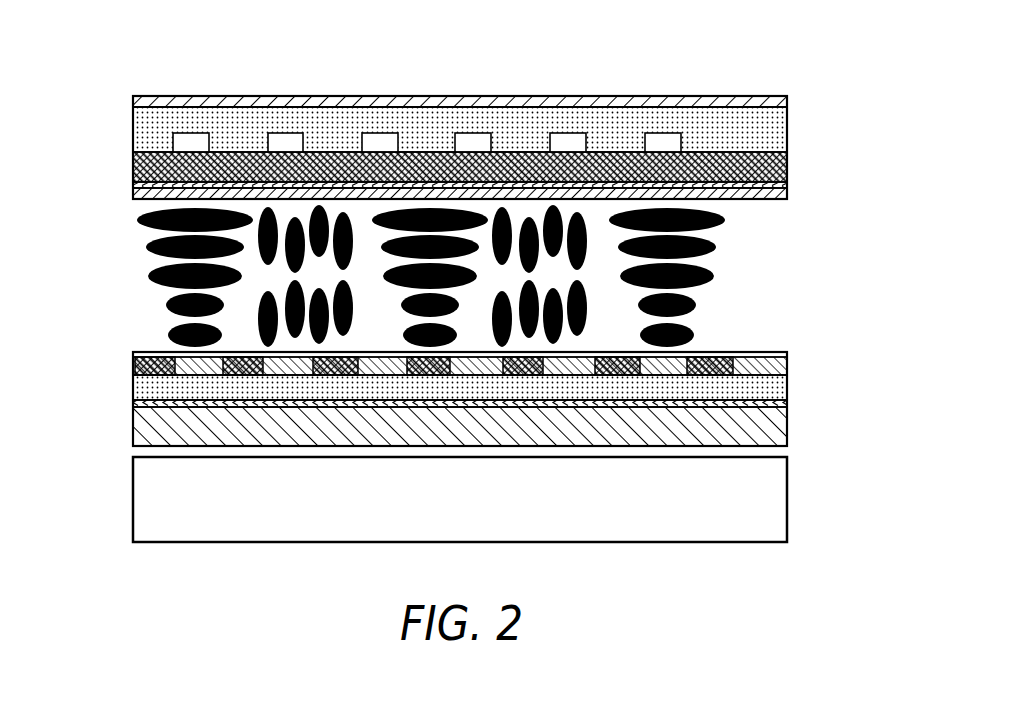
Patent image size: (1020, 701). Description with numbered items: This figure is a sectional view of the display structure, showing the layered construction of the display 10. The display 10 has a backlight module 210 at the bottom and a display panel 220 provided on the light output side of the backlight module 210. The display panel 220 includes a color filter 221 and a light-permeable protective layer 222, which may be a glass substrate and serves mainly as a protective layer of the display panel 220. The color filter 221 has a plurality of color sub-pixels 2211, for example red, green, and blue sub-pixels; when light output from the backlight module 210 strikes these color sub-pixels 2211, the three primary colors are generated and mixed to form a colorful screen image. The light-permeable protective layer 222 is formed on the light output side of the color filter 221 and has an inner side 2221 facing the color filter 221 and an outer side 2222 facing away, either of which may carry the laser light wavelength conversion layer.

The display 10 is at (500, 278).
The backlight module 210 is at (502, 499).
The display panel 220 is at (471, 235).
The color filter 221 is at (133, 165).
The light-permeable protective layer 222 is at (723, 99).
The inner side 2221 is at (237, 118).
The outer side 2222 is at (460, 97).
The color sub-pixels 2211 is at (372, 140).